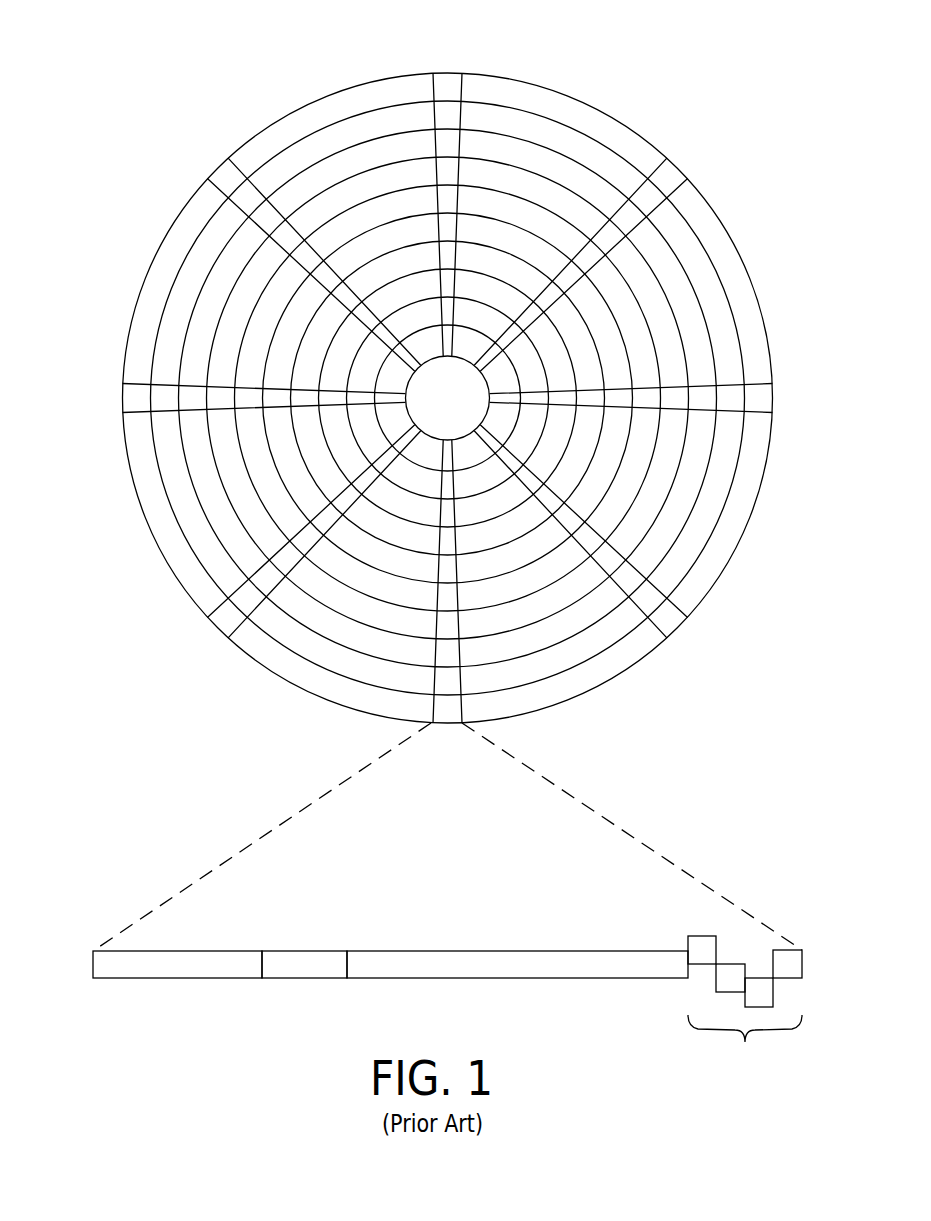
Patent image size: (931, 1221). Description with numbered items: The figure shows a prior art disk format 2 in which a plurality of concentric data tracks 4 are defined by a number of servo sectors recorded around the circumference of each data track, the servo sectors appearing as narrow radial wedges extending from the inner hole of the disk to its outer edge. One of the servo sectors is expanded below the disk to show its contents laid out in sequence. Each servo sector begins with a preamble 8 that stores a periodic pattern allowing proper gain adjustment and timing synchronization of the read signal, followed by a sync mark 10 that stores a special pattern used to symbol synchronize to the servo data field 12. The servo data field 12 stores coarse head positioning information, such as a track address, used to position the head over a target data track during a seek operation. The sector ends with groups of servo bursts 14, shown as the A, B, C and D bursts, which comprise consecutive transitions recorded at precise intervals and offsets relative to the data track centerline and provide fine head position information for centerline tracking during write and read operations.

The disk format 2 is at (205, 77).
The data tracks 4 is at (557, 138).
The preamble 8 is at (158, 979).
The sync mark 10 is at (302, 979).
The servo data field 12 is at (505, 979).
The servo bursts 14 is at (675, 917).